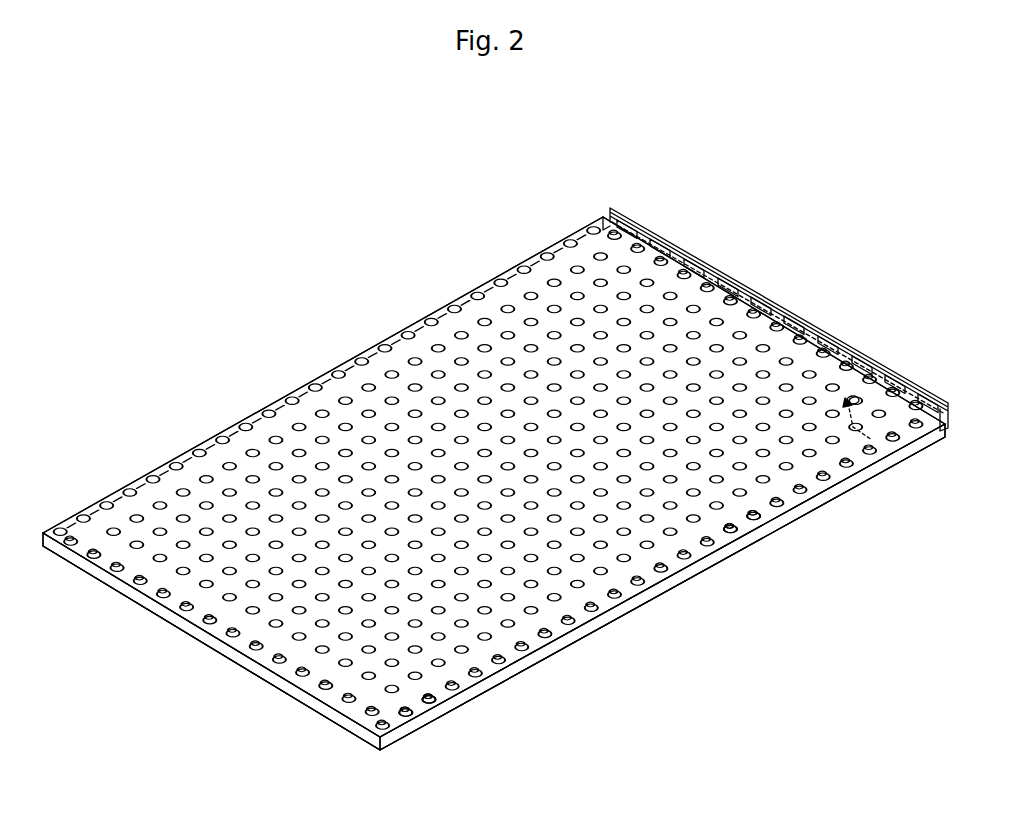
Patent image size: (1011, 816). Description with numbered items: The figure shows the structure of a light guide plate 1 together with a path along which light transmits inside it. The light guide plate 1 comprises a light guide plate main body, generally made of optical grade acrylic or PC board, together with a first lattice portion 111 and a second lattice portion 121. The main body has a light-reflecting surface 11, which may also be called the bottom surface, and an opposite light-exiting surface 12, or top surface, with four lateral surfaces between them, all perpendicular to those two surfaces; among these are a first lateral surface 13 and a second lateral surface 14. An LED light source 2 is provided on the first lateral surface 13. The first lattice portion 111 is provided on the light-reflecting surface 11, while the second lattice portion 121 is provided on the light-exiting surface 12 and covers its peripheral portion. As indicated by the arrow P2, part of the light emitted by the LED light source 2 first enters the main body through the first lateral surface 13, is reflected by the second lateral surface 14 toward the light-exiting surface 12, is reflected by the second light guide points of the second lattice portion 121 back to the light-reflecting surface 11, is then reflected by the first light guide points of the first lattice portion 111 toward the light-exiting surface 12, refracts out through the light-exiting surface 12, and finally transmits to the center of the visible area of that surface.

The light guide plate 1 is at (616, 688).
The light-reflecting surface 11 is at (714, 562).
The first lattice portion 111 is at (746, 526).
The light-exiting surface 12 is at (477, 690).
The second lattice portion 121 is at (416, 720).
The first lateral surface 13 is at (604, 214).
The second lateral surface 14 is at (806, 499).
The LED light source 2 is at (701, 262).
The arrow P2 is at (922, 441).